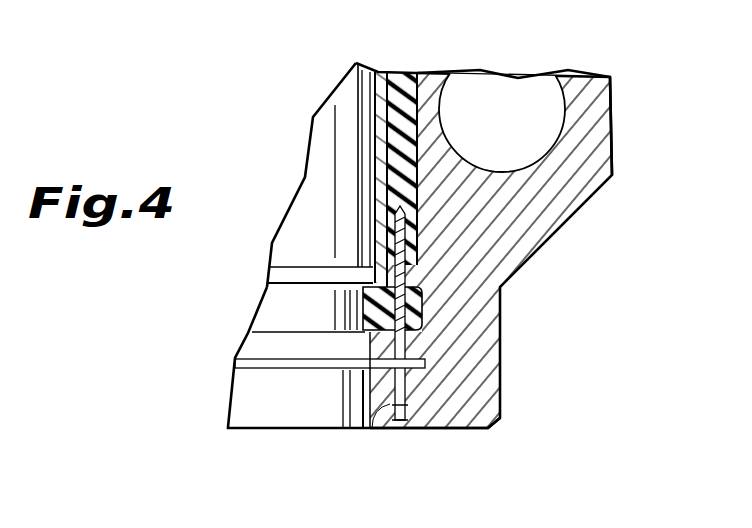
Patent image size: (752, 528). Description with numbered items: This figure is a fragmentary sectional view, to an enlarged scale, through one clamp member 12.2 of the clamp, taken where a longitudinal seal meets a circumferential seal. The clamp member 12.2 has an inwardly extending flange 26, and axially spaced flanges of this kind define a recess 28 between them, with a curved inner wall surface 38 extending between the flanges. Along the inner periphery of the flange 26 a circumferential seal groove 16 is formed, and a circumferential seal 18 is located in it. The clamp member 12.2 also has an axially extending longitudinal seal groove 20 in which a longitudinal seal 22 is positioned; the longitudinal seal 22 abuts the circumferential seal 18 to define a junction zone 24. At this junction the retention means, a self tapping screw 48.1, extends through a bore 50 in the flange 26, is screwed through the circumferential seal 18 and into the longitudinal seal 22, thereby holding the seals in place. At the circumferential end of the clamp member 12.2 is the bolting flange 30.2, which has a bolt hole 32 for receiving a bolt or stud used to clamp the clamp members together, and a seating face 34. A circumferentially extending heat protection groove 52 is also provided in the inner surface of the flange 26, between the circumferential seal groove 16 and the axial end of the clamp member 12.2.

The clamp member 12.2 is at (314, 104).
The longitudinal seal groove 20 is at (377, 72).
The longitudinal seal 22 is at (398, 75).
The bolt hole 32 is at (524, 82).
The seating face 34 is at (613, 118).
The bolting flange 30.2 is at (620, 178).
The curved inner wall surface 38 is at (335, 160).
The recess 28 is at (326, 193).
The circumferential seal 18 is at (277, 300).
The circumferential seal groove 16 is at (365, 338).
The inwardly extending flange 26 is at (266, 410).
The heat protection groove 52 is at (326, 368).
The self tapping screw 48.1 is at (440, 402).
The junction zone 24 is at (430, 344).
The bore 50 is at (458, 428).